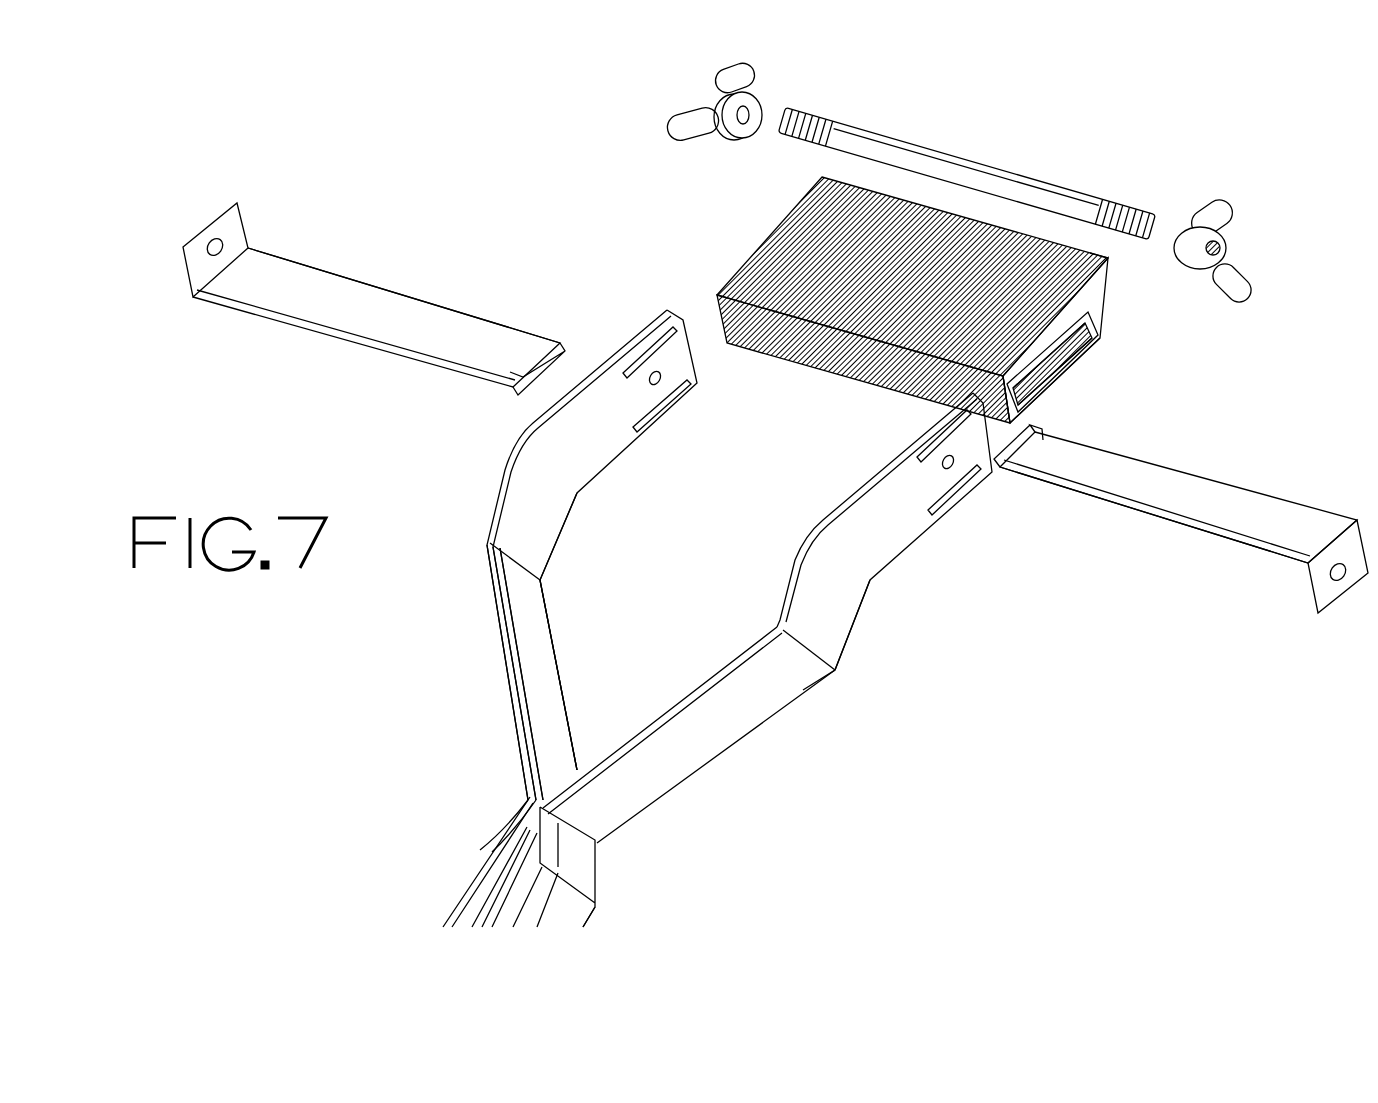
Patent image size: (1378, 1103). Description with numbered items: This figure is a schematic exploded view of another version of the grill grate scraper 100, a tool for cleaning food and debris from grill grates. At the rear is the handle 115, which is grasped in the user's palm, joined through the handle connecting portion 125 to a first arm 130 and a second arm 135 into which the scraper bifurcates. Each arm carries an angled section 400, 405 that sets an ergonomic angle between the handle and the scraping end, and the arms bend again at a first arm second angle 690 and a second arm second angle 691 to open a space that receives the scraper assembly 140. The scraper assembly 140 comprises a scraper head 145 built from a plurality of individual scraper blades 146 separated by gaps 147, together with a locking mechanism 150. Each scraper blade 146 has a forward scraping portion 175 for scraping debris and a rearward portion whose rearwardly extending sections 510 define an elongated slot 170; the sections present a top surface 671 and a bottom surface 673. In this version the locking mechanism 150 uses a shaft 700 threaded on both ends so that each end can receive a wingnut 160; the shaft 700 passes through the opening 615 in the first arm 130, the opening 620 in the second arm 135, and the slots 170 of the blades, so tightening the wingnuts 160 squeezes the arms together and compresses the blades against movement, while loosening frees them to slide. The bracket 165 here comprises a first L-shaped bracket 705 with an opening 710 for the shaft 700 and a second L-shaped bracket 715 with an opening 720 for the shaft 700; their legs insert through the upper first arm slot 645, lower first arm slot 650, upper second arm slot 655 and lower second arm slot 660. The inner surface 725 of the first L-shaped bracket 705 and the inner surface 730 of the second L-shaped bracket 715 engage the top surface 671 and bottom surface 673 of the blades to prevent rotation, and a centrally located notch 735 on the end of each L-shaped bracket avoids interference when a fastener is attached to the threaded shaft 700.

The grill grate scraper 100 is at (1143, 93).
The handle 115 is at (440, 850).
The handle connecting portion 125 is at (675, 830).
The first arm 130 is at (515, 620).
The second arm 135 is at (745, 707).
The scraper assembly 140 is at (630, 165).
The scraper head 145 is at (785, 188).
The scraper blade 146 is at (1100, 290).
The gap 147 is at (1108, 262).
The locking mechanism 150 is at (1240, 160).
The wingnut 160 is at (787, 68).
The bracket 165 is at (333, 138).
The slot 170 is at (1027, 394).
The scraping portion 175 is at (1120, 312).
The angled section 400 is at (583, 492).
The angled section 405 is at (875, 577).
The rearwardly extending section 510 is at (1048, 384).
The circular opening 615 is at (657, 382).
The second opening 620 is at (952, 465).
The upper first arm slot 645 is at (668, 340).
The lower first arm slot 650 is at (648, 422).
The upper second arm slot 655 is at (957, 427).
The lower second arm slot 660 is at (947, 517).
The top surface 671 is at (1060, 340).
The bottom surface 673 is at (1065, 362).
The first arm second angle 690 is at (540, 582).
The second arm second angle 691 is at (835, 670).
The shaft 700 is at (968, 135).
The first L-shaped bracket 705 is at (1240, 448).
The opening 710 is at (1338, 580).
The second L-shaped bracket 715 is at (375, 240).
The opening 720 is at (210, 244).
The inner surface 725 is at (1175, 533).
The inner surface 730 is at (358, 332).
The notch 735 is at (553, 373).